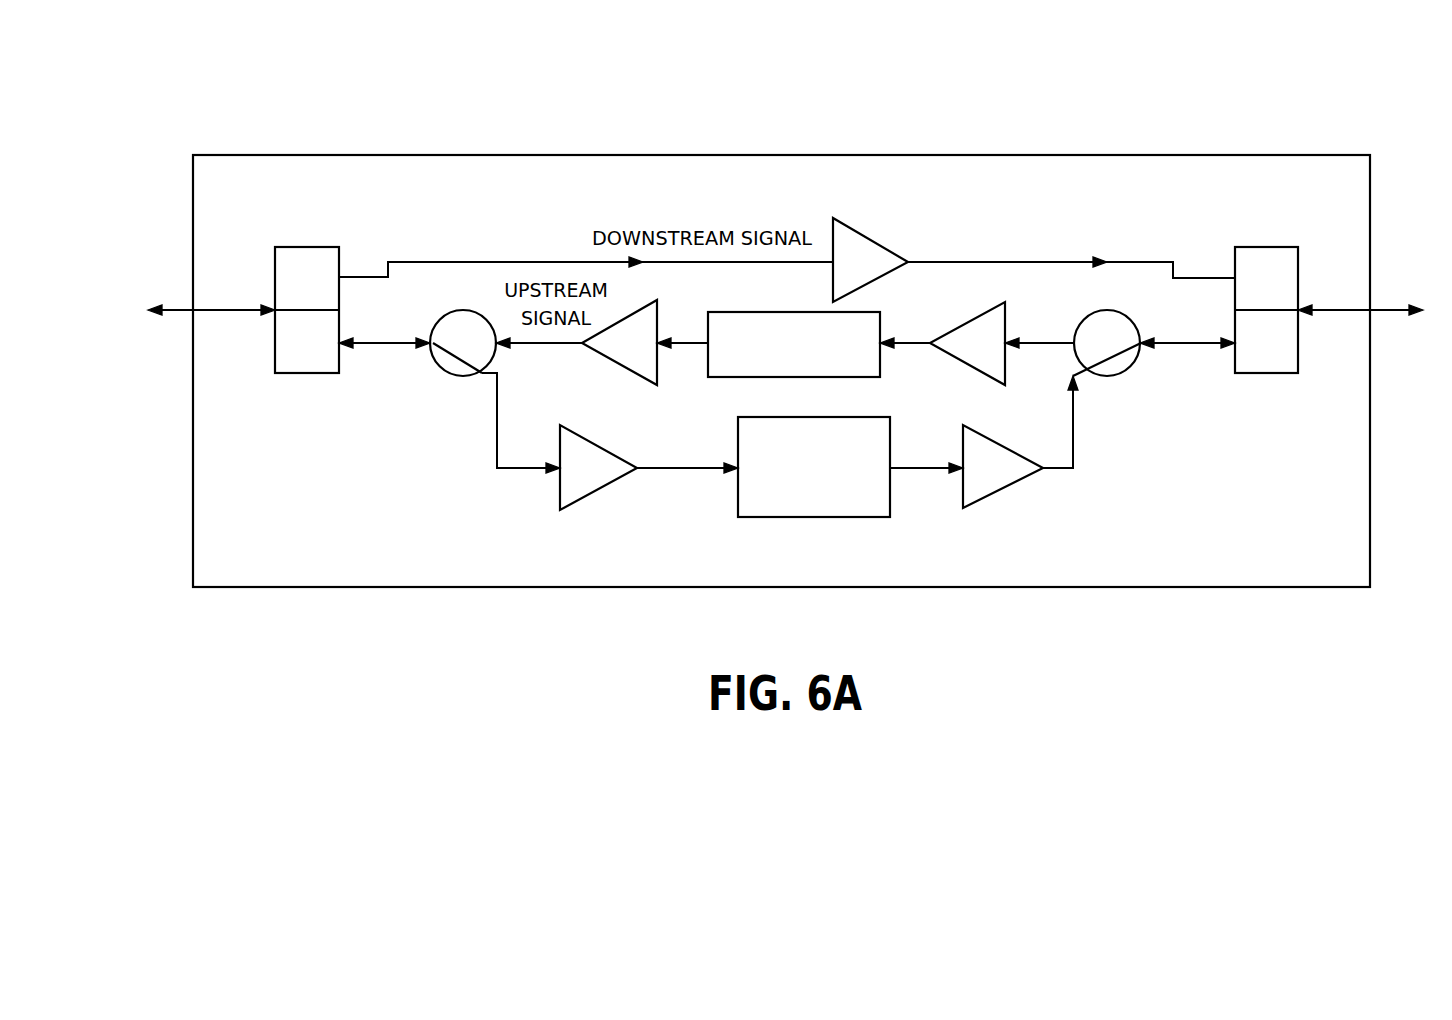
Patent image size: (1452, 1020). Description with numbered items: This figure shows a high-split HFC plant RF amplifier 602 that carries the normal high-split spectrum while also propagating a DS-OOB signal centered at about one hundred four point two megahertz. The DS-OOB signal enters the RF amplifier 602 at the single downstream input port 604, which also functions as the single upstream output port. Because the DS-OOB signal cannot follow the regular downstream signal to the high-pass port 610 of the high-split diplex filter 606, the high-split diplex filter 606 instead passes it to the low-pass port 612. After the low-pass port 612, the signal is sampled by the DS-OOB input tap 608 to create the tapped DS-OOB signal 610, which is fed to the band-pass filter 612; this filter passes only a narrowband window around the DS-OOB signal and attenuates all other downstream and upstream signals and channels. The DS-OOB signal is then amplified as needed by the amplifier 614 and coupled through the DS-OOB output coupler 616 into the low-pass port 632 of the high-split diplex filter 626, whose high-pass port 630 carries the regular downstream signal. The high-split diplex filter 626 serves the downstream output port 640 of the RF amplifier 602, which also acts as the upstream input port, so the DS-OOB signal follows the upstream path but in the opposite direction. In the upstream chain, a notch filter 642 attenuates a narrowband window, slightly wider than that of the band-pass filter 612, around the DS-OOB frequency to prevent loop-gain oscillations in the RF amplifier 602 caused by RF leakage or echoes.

The RF amplifier 602 is at (849, 191).
The downstream input port 604 is at (177, 305).
The high-split diplex filter 606 is at (303, 373).
The DS-OOB input tap 608 is at (455, 376).
The high-pass port / tapped DS-OOB signal 610 is at (517, 470).
The low-pass port / band-pass filter 612 is at (847, 517).
The amplifier 614 is at (987, 497).
The DS-OOB output coupler 616 is at (1100, 376).
The high-split diplex filter 626 is at (1250, 373).
The high-pass port 630 is at (1257, 247).
The low-pass port 632 is at (1298, 353).
The downstream output port 640 is at (1387, 307).
The notch filter 642 is at (882, 323).